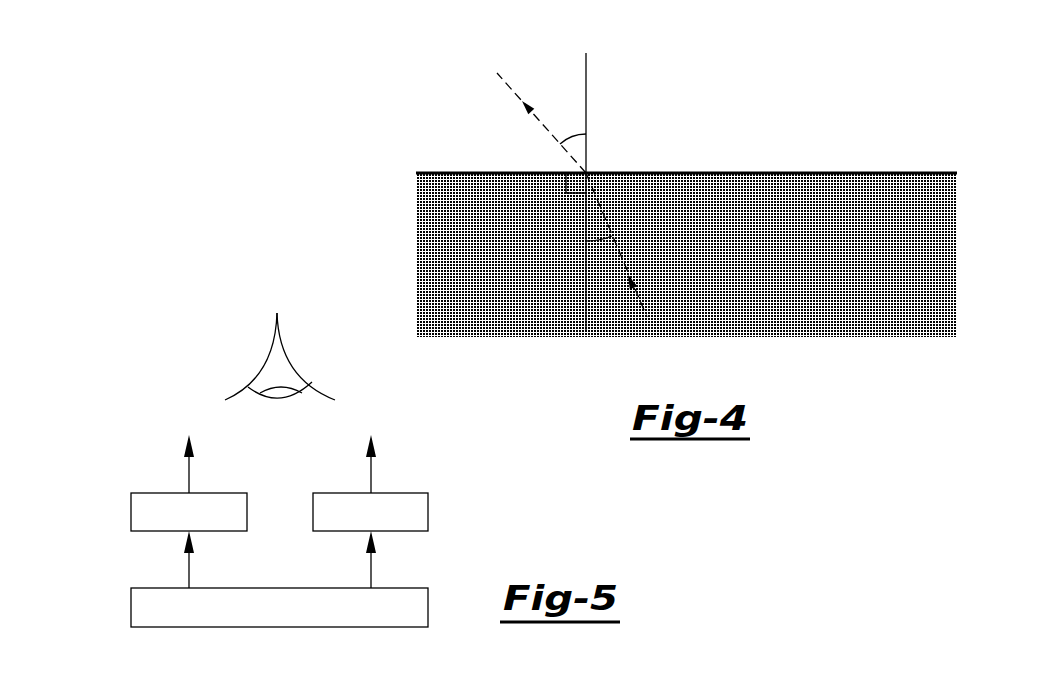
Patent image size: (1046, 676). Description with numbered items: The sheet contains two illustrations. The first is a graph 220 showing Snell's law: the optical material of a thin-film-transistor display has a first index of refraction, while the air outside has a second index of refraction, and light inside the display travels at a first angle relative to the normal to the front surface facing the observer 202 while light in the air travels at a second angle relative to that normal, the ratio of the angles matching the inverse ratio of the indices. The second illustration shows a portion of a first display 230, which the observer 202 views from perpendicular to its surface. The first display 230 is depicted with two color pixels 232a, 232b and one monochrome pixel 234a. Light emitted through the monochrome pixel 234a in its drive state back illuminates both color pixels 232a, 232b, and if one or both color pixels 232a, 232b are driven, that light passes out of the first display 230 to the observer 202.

In FIG. 4, the graph 220 is at (865, 80).
In FIG. 5, the first display 230 is at (132, 376).
In FIG. 5, the observer 202 is at (263, 362).
In FIG. 5, the color pixel 232a is at (189, 483).
In FIG. 5, the color pixel 232b is at (370, 483).
In FIG. 5, the monochrome pixel 234a is at (279, 579).